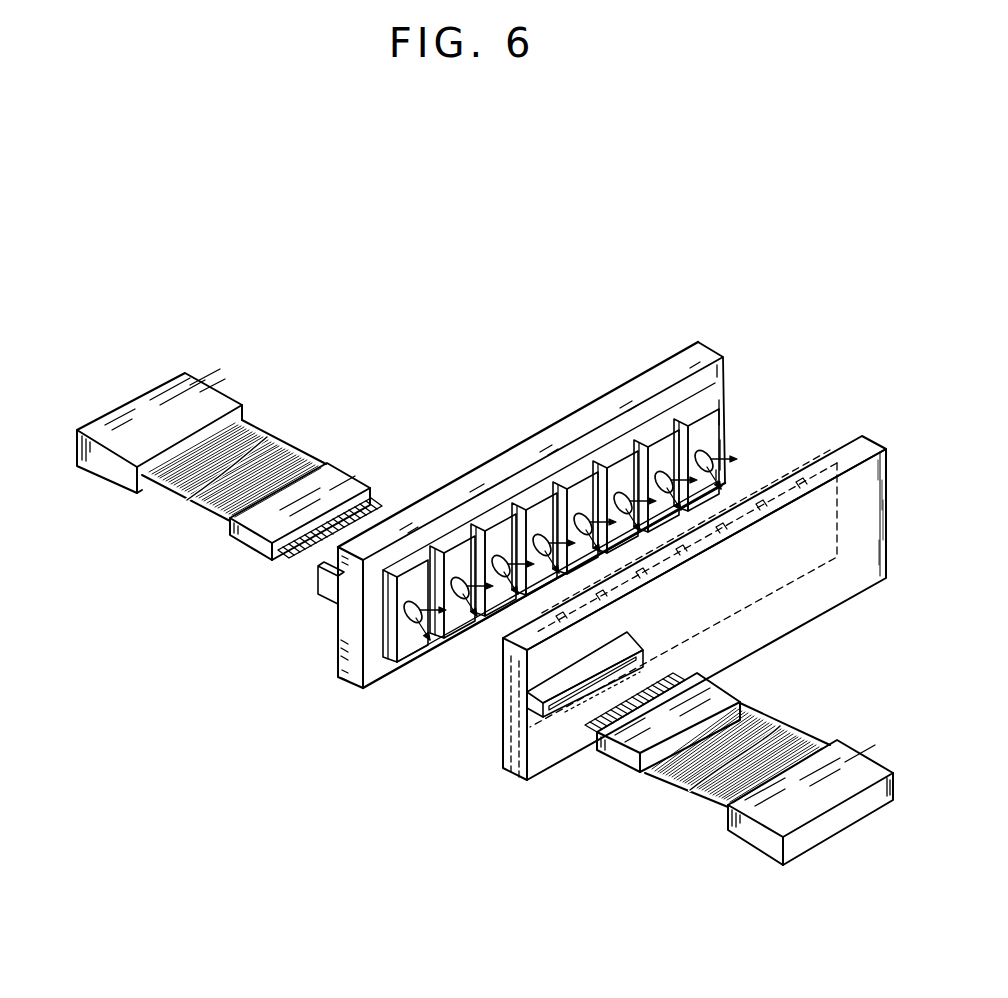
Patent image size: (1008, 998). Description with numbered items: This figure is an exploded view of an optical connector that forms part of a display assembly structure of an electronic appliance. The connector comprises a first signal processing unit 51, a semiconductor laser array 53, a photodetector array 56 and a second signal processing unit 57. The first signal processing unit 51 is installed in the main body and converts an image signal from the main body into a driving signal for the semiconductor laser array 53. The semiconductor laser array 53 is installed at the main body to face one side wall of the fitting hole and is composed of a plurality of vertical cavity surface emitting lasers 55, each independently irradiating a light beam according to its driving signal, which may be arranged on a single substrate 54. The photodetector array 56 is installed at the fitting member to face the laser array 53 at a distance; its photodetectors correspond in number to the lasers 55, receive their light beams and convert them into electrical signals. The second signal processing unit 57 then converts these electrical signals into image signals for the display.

The first signal processing unit 51 is at (120, 480).
The semiconductor laser array 53 is at (342, 683).
The substrate 54 is at (386, 653).
The vertical cavity surface emitting laser 55 is at (412, 648).
The photodetector array 56 is at (505, 738).
The second signal processing unit 57 is at (768, 850).